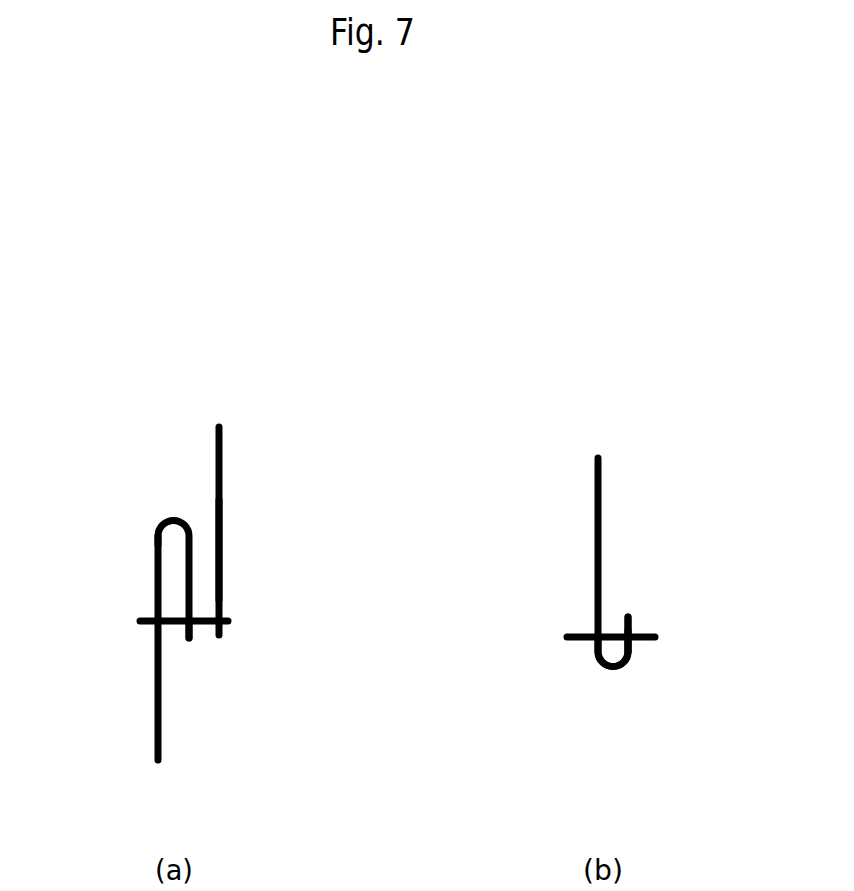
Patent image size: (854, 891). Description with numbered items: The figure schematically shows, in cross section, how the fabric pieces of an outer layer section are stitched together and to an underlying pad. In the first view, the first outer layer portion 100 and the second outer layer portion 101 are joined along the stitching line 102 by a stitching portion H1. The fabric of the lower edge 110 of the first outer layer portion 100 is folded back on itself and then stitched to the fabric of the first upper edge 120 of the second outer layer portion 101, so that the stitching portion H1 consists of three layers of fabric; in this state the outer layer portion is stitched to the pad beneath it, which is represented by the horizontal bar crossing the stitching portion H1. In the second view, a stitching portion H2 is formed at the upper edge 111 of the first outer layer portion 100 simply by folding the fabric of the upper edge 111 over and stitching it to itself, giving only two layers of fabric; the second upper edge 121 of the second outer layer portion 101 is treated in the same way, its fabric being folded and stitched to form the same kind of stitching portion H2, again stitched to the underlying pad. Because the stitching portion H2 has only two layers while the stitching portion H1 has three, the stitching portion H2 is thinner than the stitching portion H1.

In FIG. 7A, the first outer layer portion 100 is at (154, 661).
In FIG. 7A, the lower edge 110 is at (154, 572).
In FIG. 7A, the second outer layer portion 101 is at (224, 476).
In FIG. 7A, the first upper edge 120 is at (223, 548).
In FIG. 7A, the stitching line 102 is at (230, 621).
In FIG. 7A, the stitching portion H1 is at (222, 651).
In FIG. 7B, the upper edge 111 is at (596, 540).
In FIG. 7B, the second upper edge 121 is at (613, 642).
In FIG. 7B, the stitching portion H2 is at (633, 672).